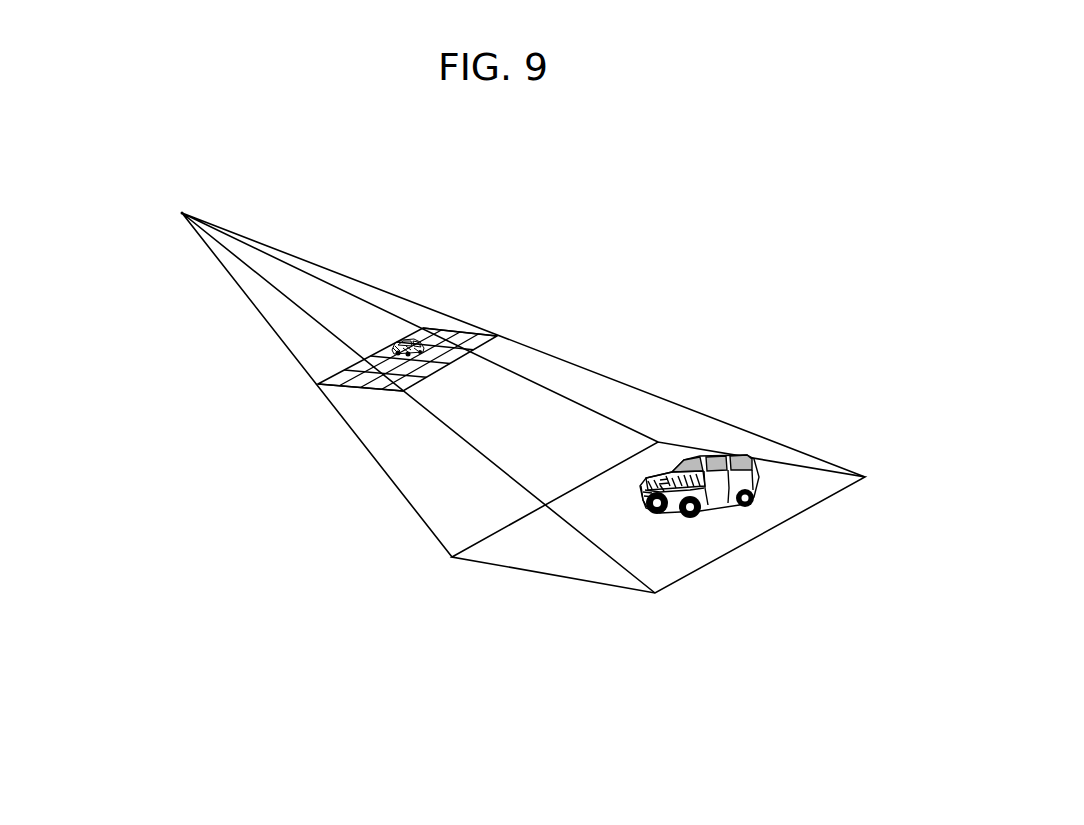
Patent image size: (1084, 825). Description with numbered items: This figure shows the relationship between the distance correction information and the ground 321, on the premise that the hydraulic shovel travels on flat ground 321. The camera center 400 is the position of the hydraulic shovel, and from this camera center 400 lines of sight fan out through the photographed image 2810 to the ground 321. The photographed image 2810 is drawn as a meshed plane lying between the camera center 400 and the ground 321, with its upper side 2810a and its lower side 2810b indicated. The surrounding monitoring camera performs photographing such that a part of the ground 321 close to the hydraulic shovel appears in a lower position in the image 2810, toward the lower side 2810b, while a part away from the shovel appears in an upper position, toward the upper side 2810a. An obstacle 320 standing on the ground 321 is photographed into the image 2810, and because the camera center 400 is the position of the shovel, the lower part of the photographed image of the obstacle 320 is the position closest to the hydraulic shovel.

The camera center 400 is at (182, 213).
The photographed image 2810 is at (499, 338).
The upper side of photographed image 2810a is at (452, 329).
The lower side of photographed image 2810b is at (320, 386).
The obstacle 320 is at (746, 464).
The ground 321 is at (522, 566).